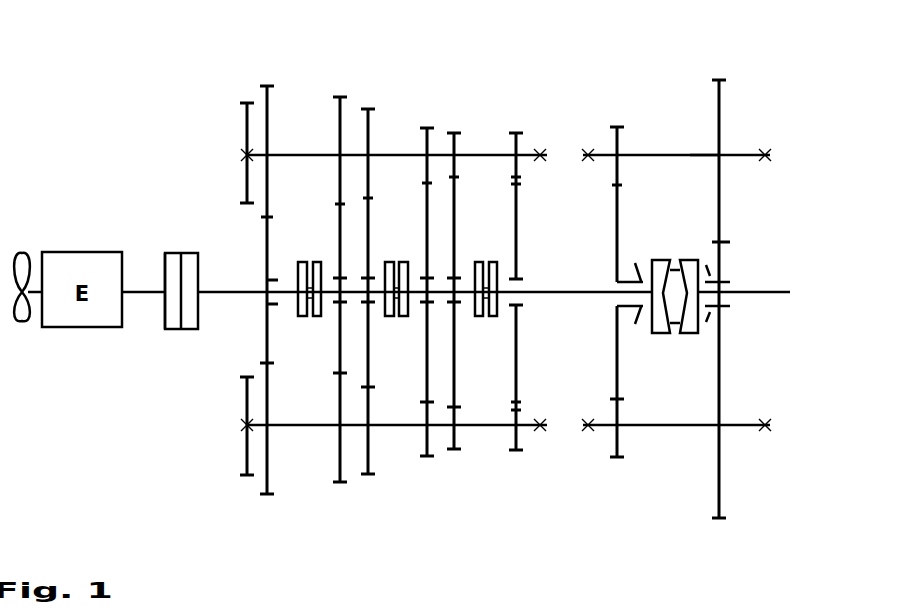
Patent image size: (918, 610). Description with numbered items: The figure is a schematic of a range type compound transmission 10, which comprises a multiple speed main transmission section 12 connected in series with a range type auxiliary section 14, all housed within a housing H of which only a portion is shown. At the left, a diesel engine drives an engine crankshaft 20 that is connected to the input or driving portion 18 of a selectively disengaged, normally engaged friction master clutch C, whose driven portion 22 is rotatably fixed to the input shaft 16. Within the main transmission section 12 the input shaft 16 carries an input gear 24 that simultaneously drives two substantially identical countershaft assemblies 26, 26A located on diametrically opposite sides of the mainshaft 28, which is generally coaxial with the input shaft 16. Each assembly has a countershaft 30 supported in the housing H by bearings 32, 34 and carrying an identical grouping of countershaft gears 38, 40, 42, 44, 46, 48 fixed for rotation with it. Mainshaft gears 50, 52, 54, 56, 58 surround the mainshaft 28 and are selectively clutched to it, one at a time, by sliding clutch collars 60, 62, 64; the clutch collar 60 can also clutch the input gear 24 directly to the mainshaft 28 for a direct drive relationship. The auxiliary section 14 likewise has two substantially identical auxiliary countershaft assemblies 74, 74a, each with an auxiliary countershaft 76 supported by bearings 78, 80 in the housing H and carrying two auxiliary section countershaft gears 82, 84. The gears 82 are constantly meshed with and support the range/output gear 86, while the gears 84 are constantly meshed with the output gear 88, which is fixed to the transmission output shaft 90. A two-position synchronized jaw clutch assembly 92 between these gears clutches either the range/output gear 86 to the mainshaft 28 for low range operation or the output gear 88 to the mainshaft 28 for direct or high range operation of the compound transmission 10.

The compound transmission 10 is at (566, 126).
The main transmission section 12 is at (405, 114).
The range type auxiliary section 14 is at (682, 64).
The input shaft 16 is at (229, 289).
The input or driving portion 18 is at (172, 318).
The engine crankshaft 20 is at (139, 290).
The driven portion 22 is at (188, 318).
The input gear 24 is at (268, 256).
The countershaft assembly 26 is at (289, 147).
The countershaft assembly 26A is at (300, 428).
The mainshaft 28 is at (572, 296).
The countershaft 30 is at (312, 158).
The bearing 32 is at (243, 426).
The bearing 34 is at (543, 432).
The countershaft gear 38 is at (266, 478).
The countershaft gear 40 is at (338, 468).
The countershaft gear 42 is at (370, 457).
The countershaft gear 44 is at (427, 443).
The countershaft gear 46 is at (454, 440).
The countershaft gear 48 is at (512, 443).
The mainshaft gear 50 is at (337, 342).
The mainshaft gear 52 is at (370, 373).
The mainshaft gear 54 is at (425, 345).
The mainshaft gear 56 is at (515, 336).
The mainshaft gear 58 is at (455, 373).
The sliding clutch collar 60 is at (297, 307).
The sliding clutch collar 62 is at (414, 268).
The sliding clutch collar 64 is at (466, 270).
The auxiliary countershaft assembly 74 is at (659, 150).
The auxiliary countershaft assembly 74a is at (665, 434).
The auxiliary countershaft 76 is at (702, 161).
The bearing 78 is at (584, 160).
The bearing 80 is at (772, 158).
The auxiliary section countershaft gear 82 is at (619, 140).
The auxiliary section countershaft gear 84 is at (722, 95).
The range/output gear 86 is at (615, 243).
The output gear 88 is at (713, 255).
The transmission output shaft 90 is at (788, 288).
The synchronized jaw clutch assembly 92 is at (665, 339).
The housing H is at (246, 130).
The friction master clutch C is at (183, 249).